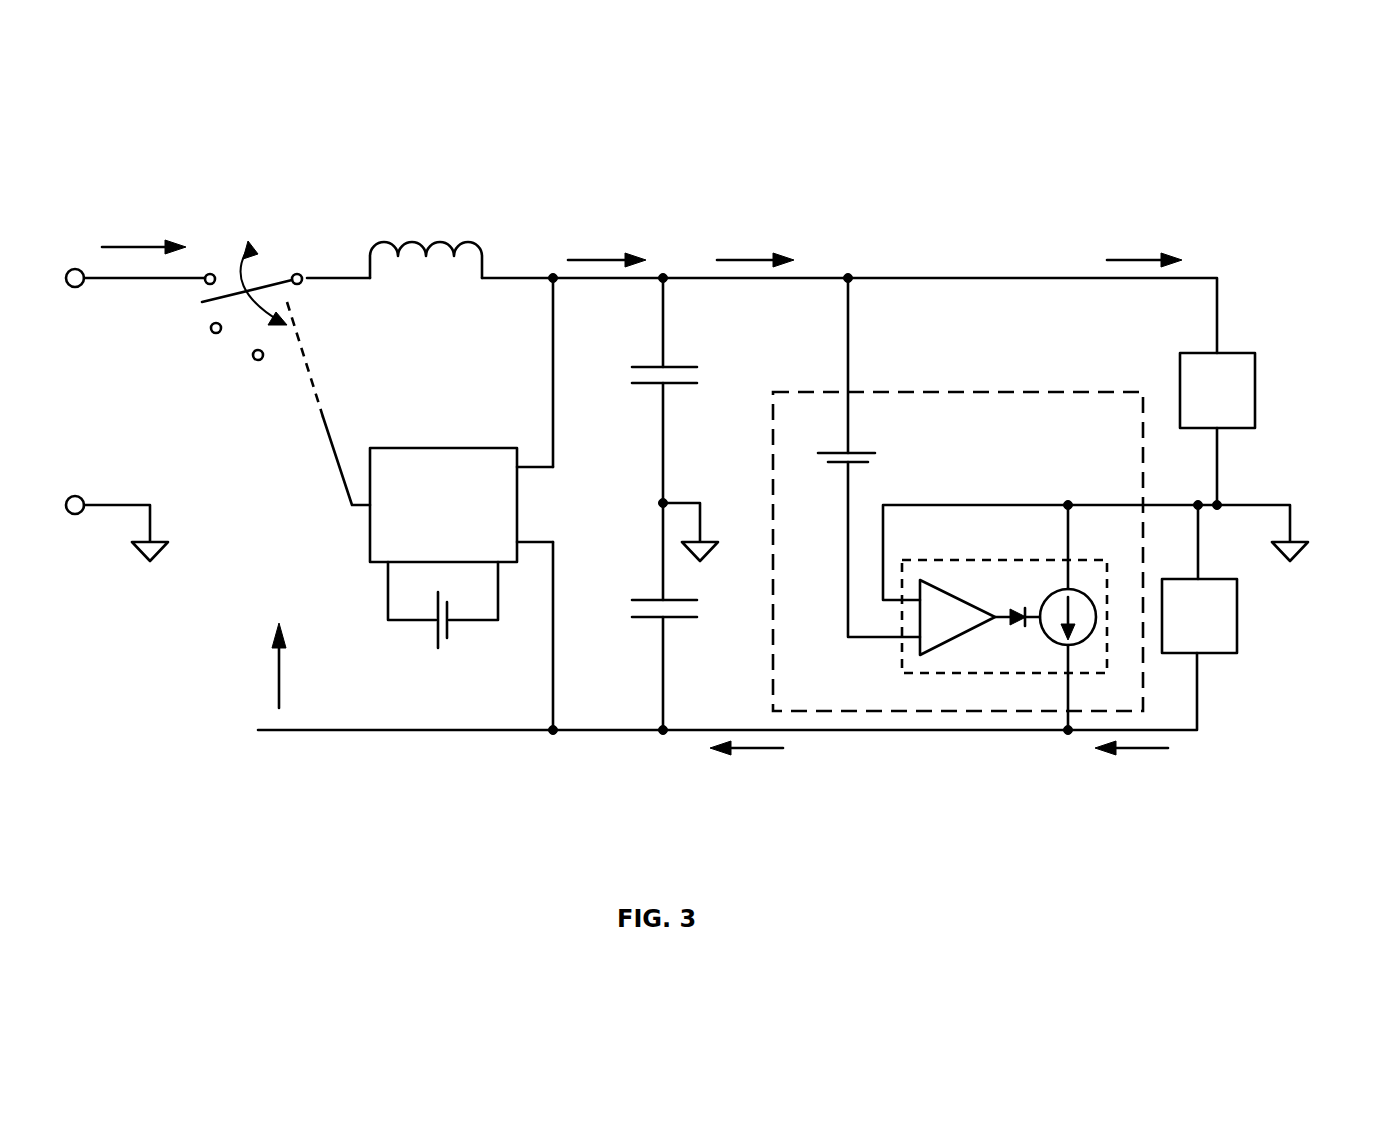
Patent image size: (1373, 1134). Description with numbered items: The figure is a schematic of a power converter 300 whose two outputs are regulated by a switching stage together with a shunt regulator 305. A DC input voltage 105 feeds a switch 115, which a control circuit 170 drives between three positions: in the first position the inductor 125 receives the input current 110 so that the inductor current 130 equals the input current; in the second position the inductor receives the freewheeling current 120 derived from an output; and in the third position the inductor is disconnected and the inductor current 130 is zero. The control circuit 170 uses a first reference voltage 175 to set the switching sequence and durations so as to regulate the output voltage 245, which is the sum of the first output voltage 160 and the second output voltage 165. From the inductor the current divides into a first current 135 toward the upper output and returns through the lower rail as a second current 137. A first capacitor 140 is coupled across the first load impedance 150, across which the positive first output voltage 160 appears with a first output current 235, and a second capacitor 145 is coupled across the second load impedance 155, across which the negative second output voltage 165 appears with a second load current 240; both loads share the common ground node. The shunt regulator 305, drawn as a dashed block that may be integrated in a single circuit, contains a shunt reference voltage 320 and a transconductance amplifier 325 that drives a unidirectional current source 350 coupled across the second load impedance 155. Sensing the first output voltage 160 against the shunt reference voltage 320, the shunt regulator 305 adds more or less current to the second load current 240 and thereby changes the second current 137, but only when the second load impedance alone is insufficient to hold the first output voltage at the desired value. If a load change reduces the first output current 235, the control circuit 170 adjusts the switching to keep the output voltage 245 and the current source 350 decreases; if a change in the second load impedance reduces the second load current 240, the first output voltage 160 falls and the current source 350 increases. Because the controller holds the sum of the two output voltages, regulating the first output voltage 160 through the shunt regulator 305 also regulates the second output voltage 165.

The power converter 300 is at (694, 141).
The input voltage VG 105 is at (88, 373).
The input current IG 110 is at (117, 227).
The switch S1 115 is at (272, 232).
The inductor L1 125 is at (425, 232).
The inductor current IL 130 is at (627, 240).
The current I1 135 is at (752, 240).
The capacitor C1 140 is at (645, 353).
The capacitor C2 145 is at (647, 635).
The control circuit 170 is at (428, 443).
The reference voltage VREF1 175 is at (422, 625).
The output voltage VO 245 is at (580, 488).
The freewheeling current IF 120 is at (293, 658).
The current I2 137 is at (738, 765).
The shunt regulator 305 is at (983, 378).
The reference voltage VREF3 320 is at (838, 443).
The transconductance amplifier 325 is at (1010, 652).
The current source ISH2 350 is at (1040, 598).
The load impedance Z1 150 is at (1206, 342).
The output voltage V1 160 is at (1293, 370).
The load impedance Z2 155 is at (1218, 665).
The output voltage V2 165 is at (1273, 597).
The output current IZ1 235 is at (1145, 240).
The load current IZ2 240 is at (1130, 767).